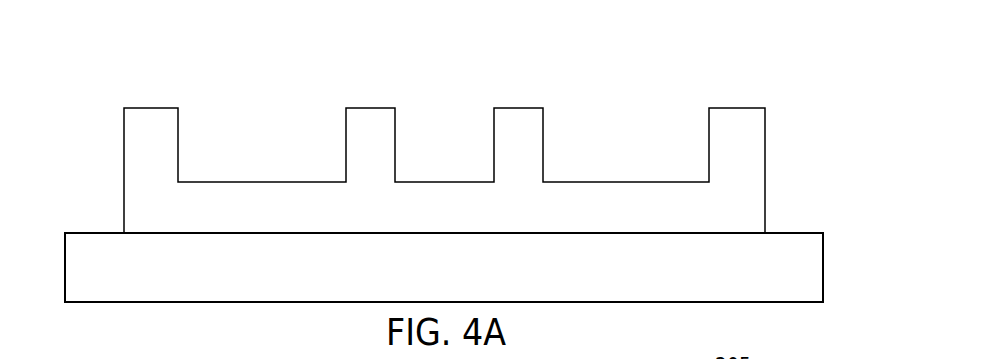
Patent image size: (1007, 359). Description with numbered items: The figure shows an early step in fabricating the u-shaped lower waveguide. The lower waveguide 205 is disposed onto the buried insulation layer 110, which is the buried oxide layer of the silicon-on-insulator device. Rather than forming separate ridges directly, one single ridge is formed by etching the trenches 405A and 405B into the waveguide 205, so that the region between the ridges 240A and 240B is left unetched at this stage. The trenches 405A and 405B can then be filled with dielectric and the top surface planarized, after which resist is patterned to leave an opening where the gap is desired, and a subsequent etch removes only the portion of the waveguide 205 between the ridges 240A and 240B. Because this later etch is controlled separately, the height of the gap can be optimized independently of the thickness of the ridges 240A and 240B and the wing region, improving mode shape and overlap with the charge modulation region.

The buried insulation layer 110 is at (788, 276).
The lower waveguide 205 is at (766, 160).
The trench 405A is at (260, 112).
The trench 405B is at (650, 112).
The ridge 240A is at (371, 150).
The ridge 240B is at (523, 150).